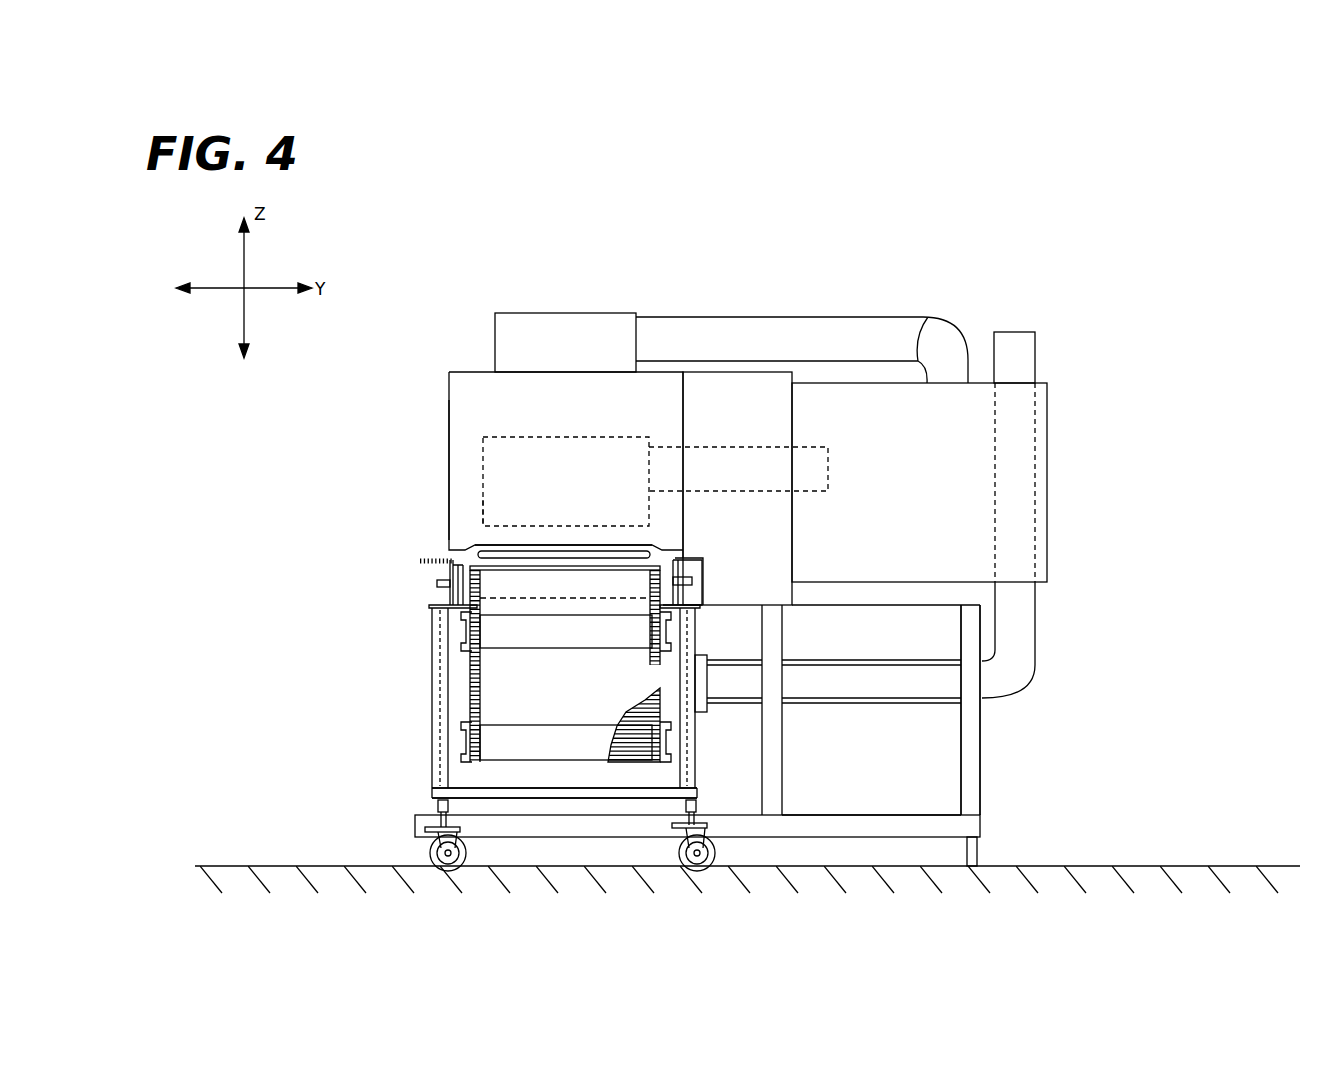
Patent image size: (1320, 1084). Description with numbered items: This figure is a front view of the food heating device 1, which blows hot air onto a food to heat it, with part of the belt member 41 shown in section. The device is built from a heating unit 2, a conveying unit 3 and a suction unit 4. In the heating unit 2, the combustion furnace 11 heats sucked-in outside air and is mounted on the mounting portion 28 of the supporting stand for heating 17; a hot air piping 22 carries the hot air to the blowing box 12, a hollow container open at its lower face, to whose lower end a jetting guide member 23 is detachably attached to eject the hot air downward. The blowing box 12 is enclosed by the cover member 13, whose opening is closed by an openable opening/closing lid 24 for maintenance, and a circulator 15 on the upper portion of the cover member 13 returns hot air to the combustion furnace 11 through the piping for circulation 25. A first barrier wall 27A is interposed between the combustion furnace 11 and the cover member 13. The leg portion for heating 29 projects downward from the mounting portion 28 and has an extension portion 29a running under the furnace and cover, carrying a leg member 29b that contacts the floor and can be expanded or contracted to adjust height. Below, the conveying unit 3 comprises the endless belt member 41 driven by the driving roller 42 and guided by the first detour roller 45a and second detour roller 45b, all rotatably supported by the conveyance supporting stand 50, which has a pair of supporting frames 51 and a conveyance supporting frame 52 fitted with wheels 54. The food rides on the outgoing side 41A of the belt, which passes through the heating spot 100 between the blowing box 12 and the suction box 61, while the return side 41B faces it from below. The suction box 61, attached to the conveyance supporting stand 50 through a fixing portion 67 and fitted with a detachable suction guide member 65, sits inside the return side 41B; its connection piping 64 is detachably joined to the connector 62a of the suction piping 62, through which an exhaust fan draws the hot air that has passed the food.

The food heating device 1 is at (710, 189).
The heating unit 2 is at (1058, 410).
The conveying unit 3 is at (422, 676).
The suction unit 4 is at (505, 686).
The combustion furnace 11 is at (1040, 445).
The blowing box 12 is at (483, 512).
The cover member 13 is at (469, 372).
The circulator 15 is at (541, 322).
The supporting stand for heating 17 is at (992, 778).
The hot air piping 22 is at (710, 445).
The jetting guide member 23 is at (483, 542).
The opening/closing lid 24 is at (452, 415).
The piping for circulation 25 is at (680, 327).
The first barrier wall 27A is at (752, 380).
The mounting portion 28 is at (970, 590).
The leg portion for heating 29 is at (970, 730).
The extension portion 29a is at (815, 825).
The leg member 29b is at (975, 845).
The belt member 41 is at (643, 745).
The outgoing side 41A is at (474, 563).
The return side 41B is at (476, 714).
The driving roller 42 is at (437, 583).
The first detour roller 45a is at (456, 632).
The second detour roller 45b is at (456, 742).
The conveyance supporting stand 50 is at (440, 782).
The supporting frame 51 is at (428, 566).
The conveyance supporting frame 52 is at (440, 766).
The wheel 54 is at (692, 844).
The suction box 61 is at (575, 705).
The suction piping 62 is at (1035, 352).
The connector 62a is at (704, 712).
The connection piping 64 is at (673, 692).
The suction guide member 65 is at (512, 570).
The fixing portion 67 is at (668, 607).
The heating spot 100 is at (547, 552).